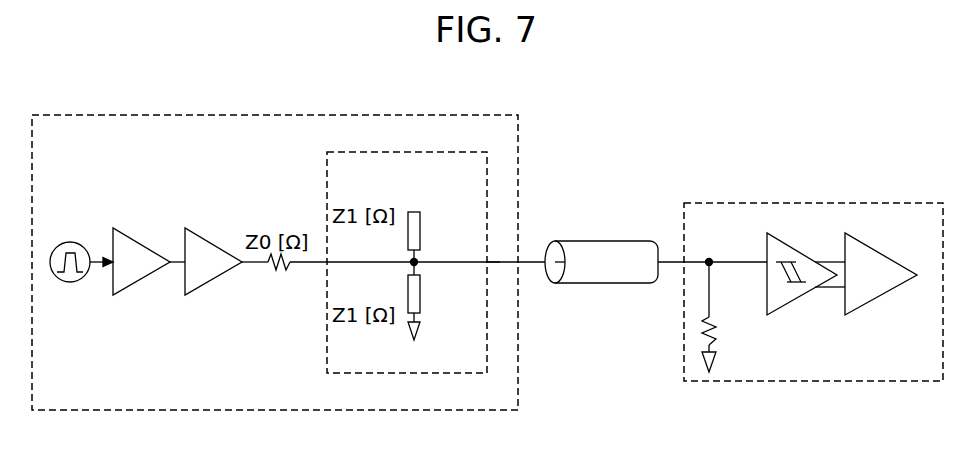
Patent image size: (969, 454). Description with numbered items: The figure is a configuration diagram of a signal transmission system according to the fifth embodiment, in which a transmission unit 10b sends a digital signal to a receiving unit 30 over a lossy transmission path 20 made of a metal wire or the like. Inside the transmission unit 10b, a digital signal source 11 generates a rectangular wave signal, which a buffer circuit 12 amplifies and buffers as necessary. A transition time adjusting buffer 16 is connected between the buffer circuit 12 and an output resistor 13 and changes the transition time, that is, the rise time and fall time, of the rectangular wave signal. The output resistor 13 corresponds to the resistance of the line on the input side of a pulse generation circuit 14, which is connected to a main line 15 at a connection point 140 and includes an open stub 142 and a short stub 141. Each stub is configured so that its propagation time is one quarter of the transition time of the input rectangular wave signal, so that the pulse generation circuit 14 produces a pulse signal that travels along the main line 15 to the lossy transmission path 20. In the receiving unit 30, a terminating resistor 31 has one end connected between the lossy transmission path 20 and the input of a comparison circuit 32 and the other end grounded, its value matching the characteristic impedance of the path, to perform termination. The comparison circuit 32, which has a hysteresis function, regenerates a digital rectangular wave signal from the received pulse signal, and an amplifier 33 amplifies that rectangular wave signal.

The transmission unit 10b is at (168, 115).
The digital signal source 11 is at (65, 243).
The buffer circuit 12 is at (136, 236).
The transition time adjusting buffer 16 is at (207, 236).
The output resistor 13 is at (278, 276).
The pulse generation circuit 14 is at (407, 151).
The open stub 142 is at (417, 210).
The connection point 140 is at (417, 258).
The short stub 141 is at (422, 313).
The main line 15 is at (455, 266).
The lossy transmission path 20 is at (599, 285).
The receiving unit 30 is at (738, 203).
The terminating resistor 31 is at (719, 334).
The comparison circuit 32 is at (798, 245).
The amplifier 33 is at (889, 292).